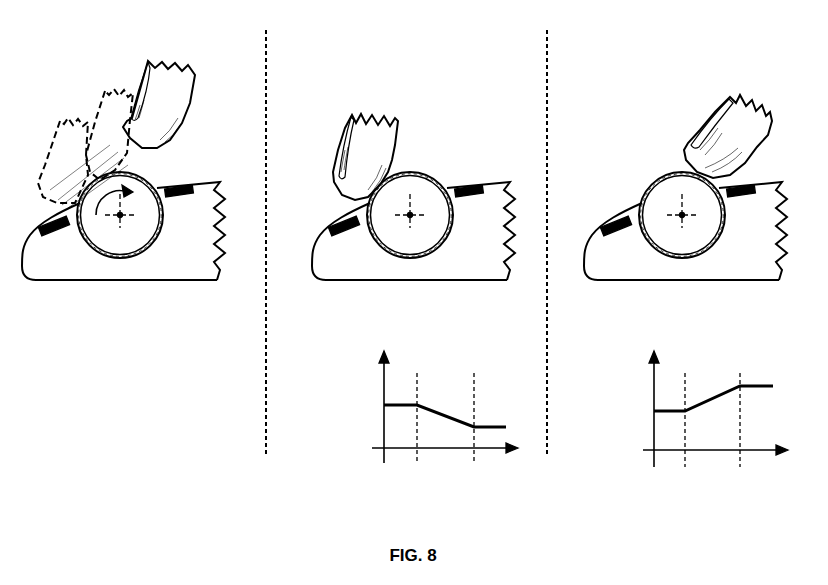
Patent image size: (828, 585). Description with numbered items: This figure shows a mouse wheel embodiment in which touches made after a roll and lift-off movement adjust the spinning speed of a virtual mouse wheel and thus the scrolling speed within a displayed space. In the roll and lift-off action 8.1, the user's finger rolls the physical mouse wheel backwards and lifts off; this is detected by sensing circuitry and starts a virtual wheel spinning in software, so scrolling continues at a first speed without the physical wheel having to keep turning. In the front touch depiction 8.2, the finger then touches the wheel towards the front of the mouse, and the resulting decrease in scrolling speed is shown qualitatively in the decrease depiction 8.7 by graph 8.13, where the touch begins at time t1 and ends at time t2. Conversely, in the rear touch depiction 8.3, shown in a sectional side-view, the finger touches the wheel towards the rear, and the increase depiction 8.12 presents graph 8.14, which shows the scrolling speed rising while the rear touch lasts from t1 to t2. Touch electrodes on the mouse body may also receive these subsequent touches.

The roll and lift-off action 8.1 is at (128, 175).
The front touch depiction 8.2 is at (418, 175).
The rear touch depiction 8.3 is at (690, 175).
The decrease depiction 8.7 is at (419, 418).
The increase depiction 8.12 is at (691, 417).
The graph 8.13 is at (445, 401).
The graph 8.14 is at (713, 382).